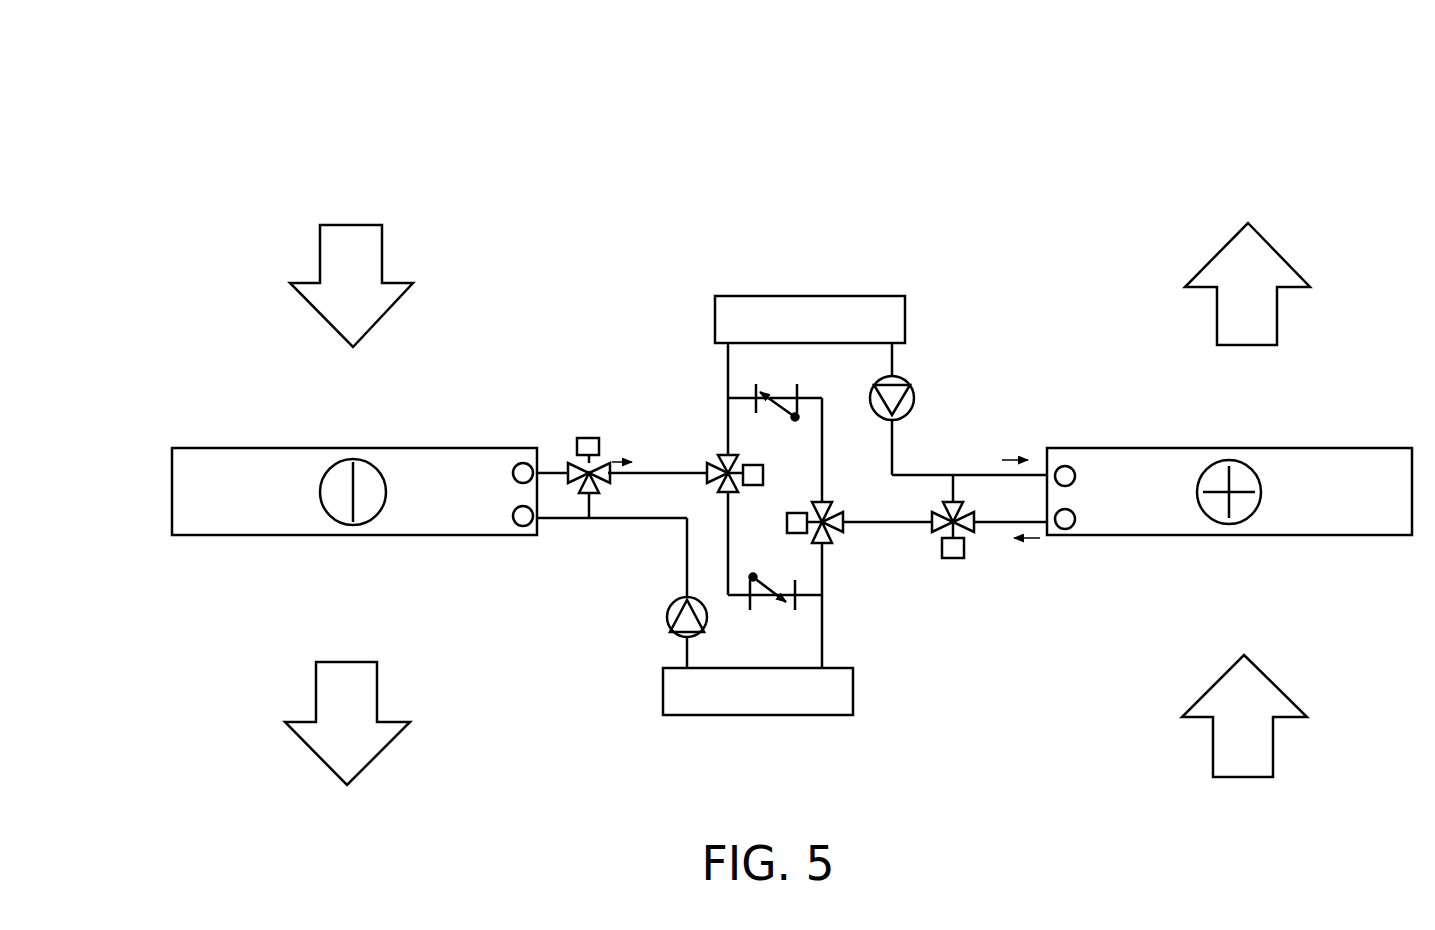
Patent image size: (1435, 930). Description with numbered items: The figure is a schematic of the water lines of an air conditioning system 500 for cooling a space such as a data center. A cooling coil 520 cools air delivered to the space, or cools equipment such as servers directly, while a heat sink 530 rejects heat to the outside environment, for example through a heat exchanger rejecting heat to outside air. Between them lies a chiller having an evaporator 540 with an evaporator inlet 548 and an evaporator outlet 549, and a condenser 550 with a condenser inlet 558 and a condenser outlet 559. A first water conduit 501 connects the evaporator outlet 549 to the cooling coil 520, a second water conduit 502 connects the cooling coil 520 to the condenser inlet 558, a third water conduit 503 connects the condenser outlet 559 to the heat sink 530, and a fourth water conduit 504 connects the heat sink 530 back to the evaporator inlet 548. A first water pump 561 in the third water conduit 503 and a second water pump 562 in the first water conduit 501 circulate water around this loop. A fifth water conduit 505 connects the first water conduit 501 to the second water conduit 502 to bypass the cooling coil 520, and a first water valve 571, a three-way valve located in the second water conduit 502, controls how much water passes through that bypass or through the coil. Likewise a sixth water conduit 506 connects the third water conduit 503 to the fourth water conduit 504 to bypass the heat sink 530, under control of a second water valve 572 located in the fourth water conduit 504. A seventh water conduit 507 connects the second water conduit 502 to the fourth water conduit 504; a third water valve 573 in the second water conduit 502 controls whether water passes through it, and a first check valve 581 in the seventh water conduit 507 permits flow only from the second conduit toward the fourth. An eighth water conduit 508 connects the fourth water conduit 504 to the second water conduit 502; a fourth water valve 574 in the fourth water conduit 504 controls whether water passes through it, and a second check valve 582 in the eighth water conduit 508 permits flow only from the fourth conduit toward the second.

The air conditioning system 500 is at (190, 172).
The cooling coil 520 is at (272, 442).
The heat sink 530 is at (1140, 444).
The condenser 550 is at (790, 289).
The evaporator 540 is at (686, 720).
The condenser inlet 558 is at (728, 340).
The condenser outlet 559 is at (893, 340).
The first water pump 561 is at (899, 371).
The third water conduit 503 is at (884, 369).
The second water conduit 502 is at (724, 432).
The fifth water conduit 505 is at (595, 496).
The first water valve 571 is at (586, 435).
The first water conduit 501 is at (680, 551).
The second water pump 562 is at (669, 639).
The evaporator outlet 549 is at (685, 674).
The evaporator inlet 548 is at (825, 674).
The seventh water conduit 507 is at (731, 598).
The third water valve 573 is at (742, 498).
The second check valve 582 is at (785, 390).
The eighth water conduit 508 is at (828, 460).
The fourth water valve 574 is at (841, 543).
The first check valve 581 is at (780, 605).
The fourth water conduit 504 is at (876, 529).
The sixth water conduit 506 is at (966, 492).
The second water valve 572 is at (946, 562).